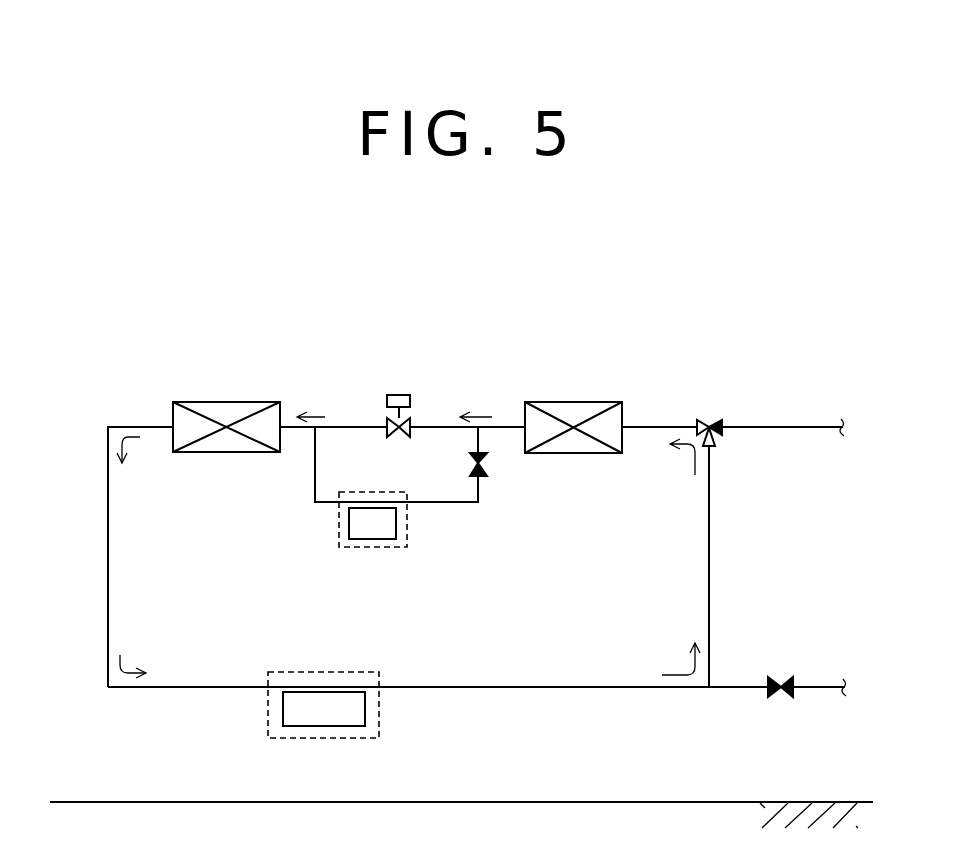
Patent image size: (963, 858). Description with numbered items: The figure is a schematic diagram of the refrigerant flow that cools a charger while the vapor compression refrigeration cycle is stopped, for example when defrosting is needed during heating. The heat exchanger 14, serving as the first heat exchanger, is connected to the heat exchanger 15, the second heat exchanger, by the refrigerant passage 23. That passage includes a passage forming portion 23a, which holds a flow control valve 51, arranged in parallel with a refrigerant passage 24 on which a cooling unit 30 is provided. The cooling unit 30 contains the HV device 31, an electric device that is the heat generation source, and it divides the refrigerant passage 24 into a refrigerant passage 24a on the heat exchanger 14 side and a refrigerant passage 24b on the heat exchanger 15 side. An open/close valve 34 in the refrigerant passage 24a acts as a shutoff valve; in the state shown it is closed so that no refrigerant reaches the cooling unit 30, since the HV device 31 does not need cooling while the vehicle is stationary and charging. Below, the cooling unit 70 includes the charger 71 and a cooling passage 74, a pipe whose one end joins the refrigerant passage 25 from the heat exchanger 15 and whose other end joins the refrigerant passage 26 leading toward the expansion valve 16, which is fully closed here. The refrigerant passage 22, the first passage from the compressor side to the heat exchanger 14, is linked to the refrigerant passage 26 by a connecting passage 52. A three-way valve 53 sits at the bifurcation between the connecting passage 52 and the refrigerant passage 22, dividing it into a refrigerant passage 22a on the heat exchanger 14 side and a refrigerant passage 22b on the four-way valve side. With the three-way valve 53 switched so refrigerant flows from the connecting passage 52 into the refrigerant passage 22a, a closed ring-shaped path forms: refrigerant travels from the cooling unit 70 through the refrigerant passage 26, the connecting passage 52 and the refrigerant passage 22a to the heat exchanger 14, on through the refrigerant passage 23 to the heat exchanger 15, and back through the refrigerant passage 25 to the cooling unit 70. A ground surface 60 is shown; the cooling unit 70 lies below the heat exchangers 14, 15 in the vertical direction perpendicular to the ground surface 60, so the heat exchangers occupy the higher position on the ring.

The heat exchanger 14 is at (575, 413).
The heat exchanger 15 is at (226, 413).
The expansion valve 16 is at (785, 698).
The refrigerant passage 22 is at (728, 375).
The refrigerant passage 22a is at (650, 425).
The refrigerant passage 22b is at (766, 425).
The refrigerant passage 23 is at (507, 425).
The passage forming portion 23a is at (351, 425).
The refrigerant passage 24 is at (352, 518).
The refrigerant passage 24a is at (458, 505).
The refrigerant passage 24b is at (315, 480).
The refrigerant passage 25 is at (107, 557).
The refrigerant passage 26 is at (540, 690).
The cooling unit 30 is at (397, 548).
The HV device 31 is at (372, 528).
The open/close valve 34 is at (487, 471).
The flow control valve 51 is at (398, 395).
The connecting passage 52 is at (711, 557).
The three-way valve 53 is at (707, 420).
The ground surface 60 is at (857, 801).
The cooling unit 70 is at (288, 670).
The charger 71 is at (324, 706).
The cooling passage 74 is at (351, 688).